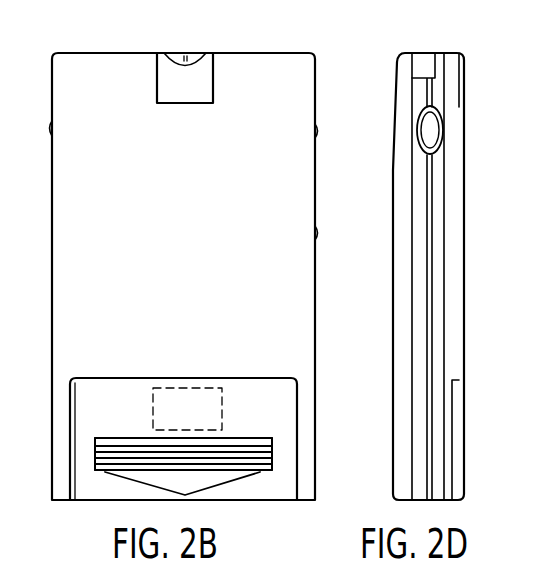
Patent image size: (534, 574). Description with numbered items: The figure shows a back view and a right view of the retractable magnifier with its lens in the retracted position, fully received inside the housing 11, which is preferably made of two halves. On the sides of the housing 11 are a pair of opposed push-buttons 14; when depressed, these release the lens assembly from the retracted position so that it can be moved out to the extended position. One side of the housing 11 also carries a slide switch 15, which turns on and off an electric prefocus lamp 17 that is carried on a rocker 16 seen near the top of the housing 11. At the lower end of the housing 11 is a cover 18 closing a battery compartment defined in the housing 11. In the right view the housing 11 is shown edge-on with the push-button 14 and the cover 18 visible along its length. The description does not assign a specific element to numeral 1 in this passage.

In FIG. 2B, the portable electronic device 1 is at (189, 276).
In FIG. 2B, the housing 11 is at (302, 351).
In FIG. 2D, the housing 11 is at (408, 357).
In FIG. 2B, the push-buttons 14 is at (49, 128).
In FIG. 2D, the push-buttons 14 is at (433, 123).
In FIG. 2B, the slide switch 15 is at (320, 233).
In FIG. 2B, the rocker 16 is at (207, 83).
In FIG. 2B, the electric prefocus lamp 17 is at (188, 57).
In FIG. 2B, the cover 18 is at (256, 489).
In FIG. 2D, the cover 18 is at (455, 467).